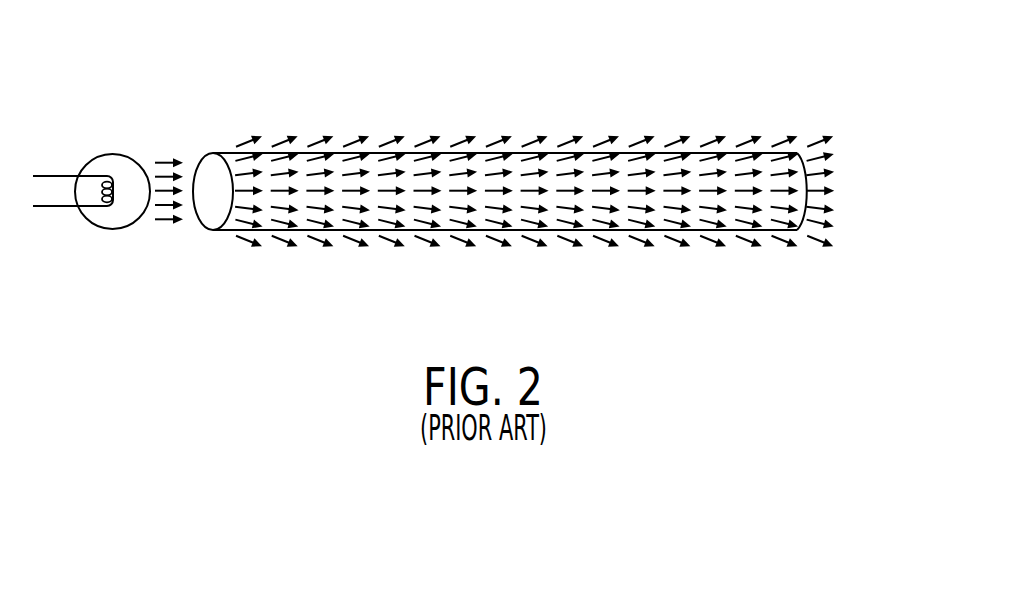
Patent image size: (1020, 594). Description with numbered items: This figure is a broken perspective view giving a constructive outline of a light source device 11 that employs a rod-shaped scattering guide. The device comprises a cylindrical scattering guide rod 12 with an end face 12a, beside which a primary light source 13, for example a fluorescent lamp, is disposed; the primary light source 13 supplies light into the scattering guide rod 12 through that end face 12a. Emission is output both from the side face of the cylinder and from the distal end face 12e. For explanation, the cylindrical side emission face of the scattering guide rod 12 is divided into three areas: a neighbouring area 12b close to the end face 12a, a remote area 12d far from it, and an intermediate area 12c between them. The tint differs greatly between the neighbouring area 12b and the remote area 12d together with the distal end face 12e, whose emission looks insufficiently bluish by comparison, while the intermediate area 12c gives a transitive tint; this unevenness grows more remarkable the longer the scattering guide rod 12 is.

The light source device 11 is at (450, 74).
The scattering guide rod 12 is at (553, 165).
The end face 12a is at (208, 201).
The neighbouring area 12b is at (275, 254).
The intermediate area 12c is at (465, 254).
The remote area 12d is at (700, 254).
The distal end face 12e is at (812, 185).
The primary light source 13 is at (114, 146).